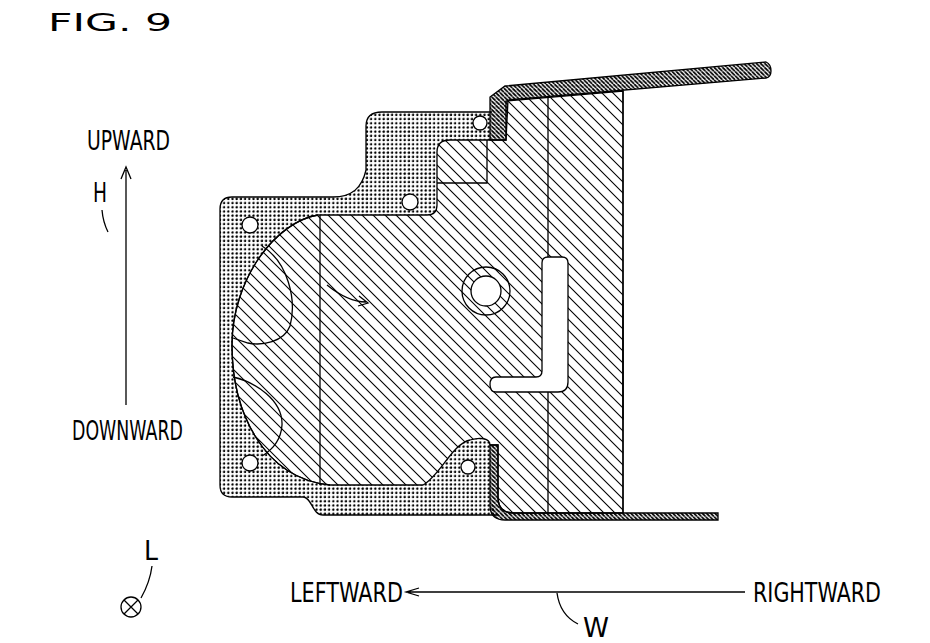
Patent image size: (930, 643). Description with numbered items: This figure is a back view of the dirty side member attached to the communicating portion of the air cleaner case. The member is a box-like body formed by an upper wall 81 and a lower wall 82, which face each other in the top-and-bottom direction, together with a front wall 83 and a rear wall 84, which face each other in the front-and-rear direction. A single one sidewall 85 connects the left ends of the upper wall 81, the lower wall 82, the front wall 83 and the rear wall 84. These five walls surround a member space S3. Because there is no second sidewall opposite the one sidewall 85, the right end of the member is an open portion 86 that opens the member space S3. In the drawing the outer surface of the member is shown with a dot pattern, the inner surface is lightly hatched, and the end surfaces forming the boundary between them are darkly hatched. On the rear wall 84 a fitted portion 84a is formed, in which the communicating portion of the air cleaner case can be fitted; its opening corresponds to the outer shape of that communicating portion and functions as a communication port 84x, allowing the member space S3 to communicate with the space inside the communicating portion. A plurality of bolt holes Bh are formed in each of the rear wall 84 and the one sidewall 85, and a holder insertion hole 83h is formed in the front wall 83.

The upper wall 81 is at (400, 112).
The lower wall 82 is at (580, 520).
The front wall 83 is at (603, 193).
The holder insertion hole 83h is at (552, 298).
The rear wall 84 is at (277, 484).
The fitted portion 84a is at (233, 377).
The communication port 84x is at (270, 253).
The one sidewall 85 is at (228, 302).
The open portion 86 is at (645, 361).
The bolt hole Bh is at (482, 116).
The member space S3 is at (438, 364).